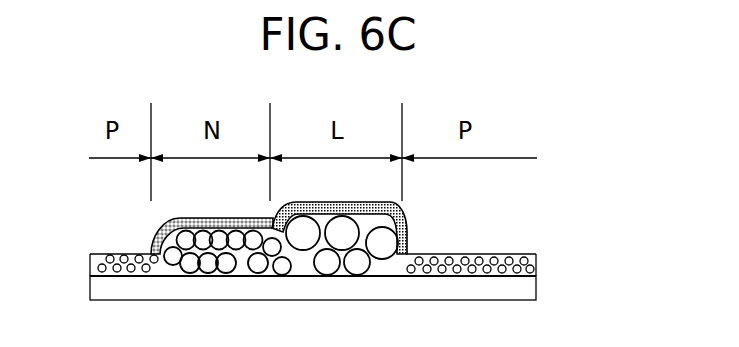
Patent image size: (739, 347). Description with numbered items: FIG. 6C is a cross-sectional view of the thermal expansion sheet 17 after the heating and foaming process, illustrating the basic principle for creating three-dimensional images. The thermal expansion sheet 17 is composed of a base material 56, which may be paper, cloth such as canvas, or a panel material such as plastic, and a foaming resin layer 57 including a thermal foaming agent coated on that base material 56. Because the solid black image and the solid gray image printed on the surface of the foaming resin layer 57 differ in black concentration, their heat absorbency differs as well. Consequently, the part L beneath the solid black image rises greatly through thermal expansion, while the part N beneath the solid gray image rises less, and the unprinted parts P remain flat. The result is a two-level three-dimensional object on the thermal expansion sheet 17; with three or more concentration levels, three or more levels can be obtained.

The thermal expansion sheet 17 is at (380, 251).
The base material 56 is at (537, 290).
The foaming resin layer 57 is at (537, 262).